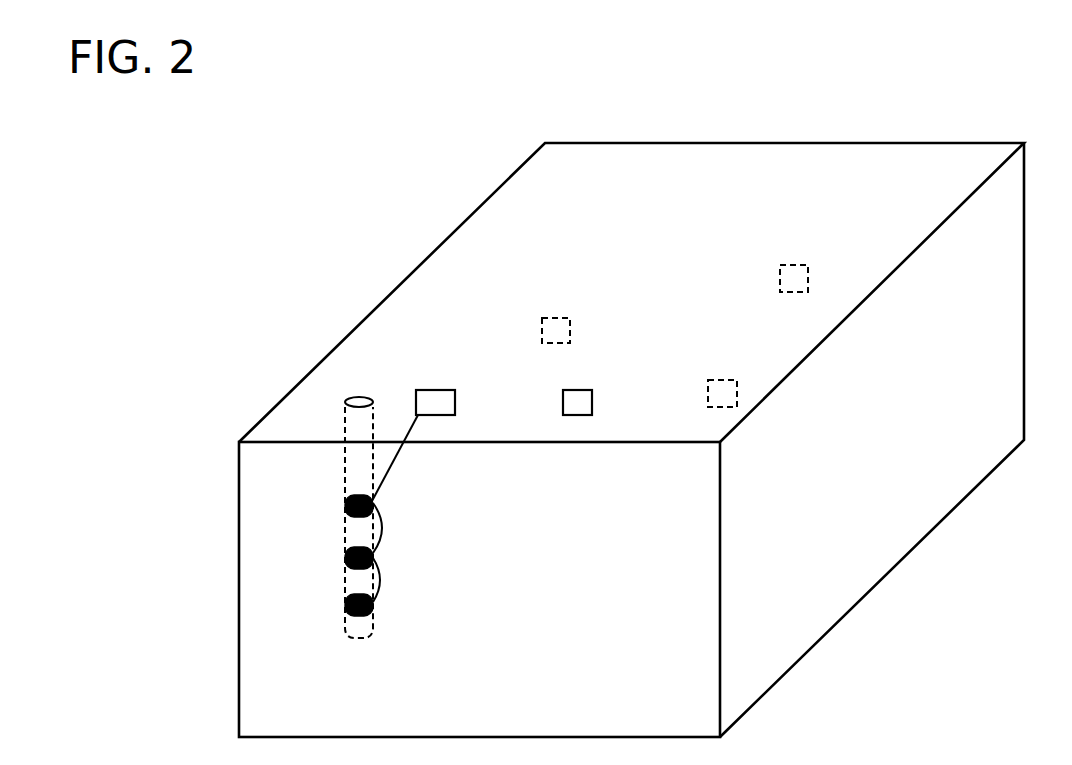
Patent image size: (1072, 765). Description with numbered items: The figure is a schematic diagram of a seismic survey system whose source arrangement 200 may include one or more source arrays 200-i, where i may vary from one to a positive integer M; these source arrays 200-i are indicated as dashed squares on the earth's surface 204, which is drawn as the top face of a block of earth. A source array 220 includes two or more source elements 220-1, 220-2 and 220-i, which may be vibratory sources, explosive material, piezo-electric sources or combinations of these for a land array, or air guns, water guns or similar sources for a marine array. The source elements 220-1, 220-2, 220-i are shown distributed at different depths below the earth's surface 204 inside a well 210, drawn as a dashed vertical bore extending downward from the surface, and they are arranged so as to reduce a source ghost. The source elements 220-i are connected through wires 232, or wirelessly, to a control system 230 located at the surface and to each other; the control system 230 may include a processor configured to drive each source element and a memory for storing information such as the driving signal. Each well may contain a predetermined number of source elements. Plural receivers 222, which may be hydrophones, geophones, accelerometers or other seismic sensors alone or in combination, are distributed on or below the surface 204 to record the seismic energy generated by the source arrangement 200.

The source arrangement 200 is at (693, 72).
The earth's surface 204 is at (958, 160).
The source array 200-i is at (795, 265).
The receiver 222 is at (592, 402).
The control system 230 is at (433, 390).
The wires 232 is at (396, 465).
The well 210 is at (345, 482).
The source array 220 is at (331, 556).
The source element 220-1 is at (373, 501).
The source element 220-2 is at (373, 557).
The source element 220-i is at (373, 606).